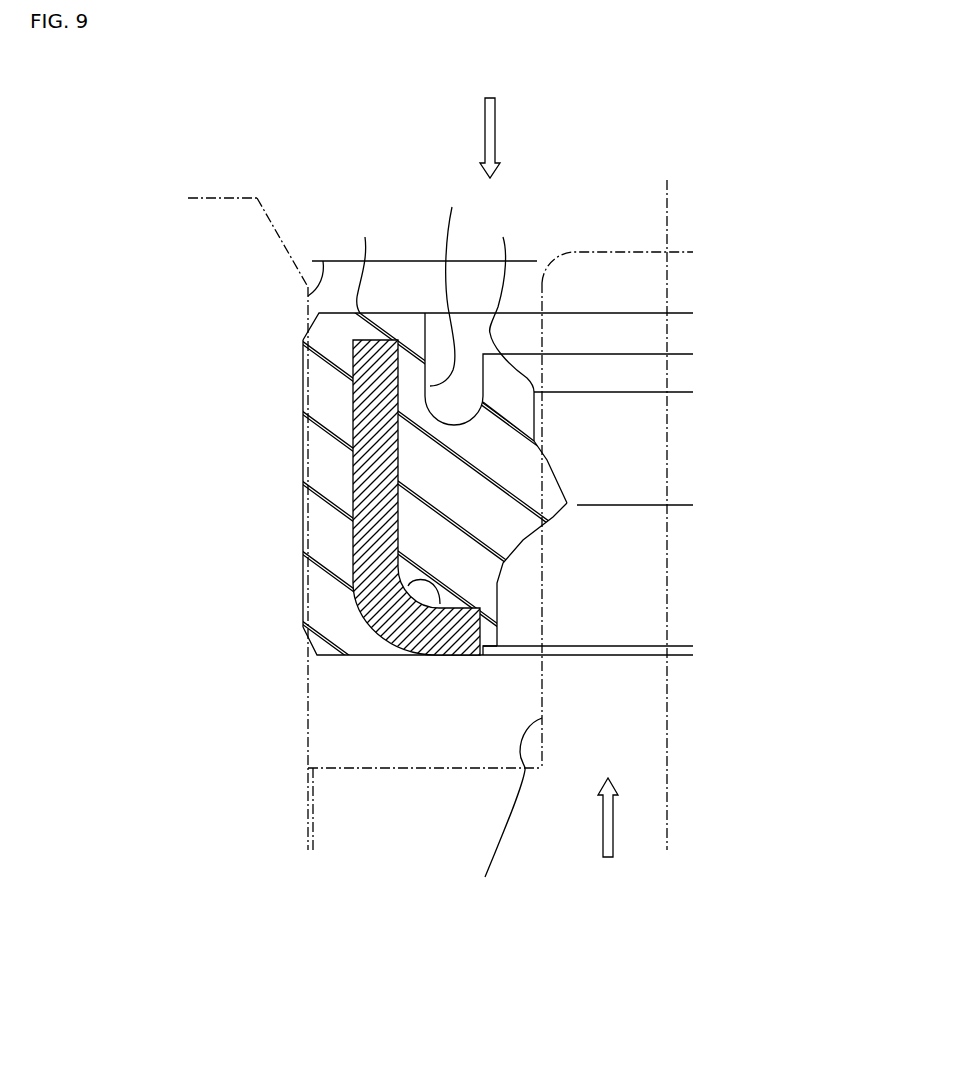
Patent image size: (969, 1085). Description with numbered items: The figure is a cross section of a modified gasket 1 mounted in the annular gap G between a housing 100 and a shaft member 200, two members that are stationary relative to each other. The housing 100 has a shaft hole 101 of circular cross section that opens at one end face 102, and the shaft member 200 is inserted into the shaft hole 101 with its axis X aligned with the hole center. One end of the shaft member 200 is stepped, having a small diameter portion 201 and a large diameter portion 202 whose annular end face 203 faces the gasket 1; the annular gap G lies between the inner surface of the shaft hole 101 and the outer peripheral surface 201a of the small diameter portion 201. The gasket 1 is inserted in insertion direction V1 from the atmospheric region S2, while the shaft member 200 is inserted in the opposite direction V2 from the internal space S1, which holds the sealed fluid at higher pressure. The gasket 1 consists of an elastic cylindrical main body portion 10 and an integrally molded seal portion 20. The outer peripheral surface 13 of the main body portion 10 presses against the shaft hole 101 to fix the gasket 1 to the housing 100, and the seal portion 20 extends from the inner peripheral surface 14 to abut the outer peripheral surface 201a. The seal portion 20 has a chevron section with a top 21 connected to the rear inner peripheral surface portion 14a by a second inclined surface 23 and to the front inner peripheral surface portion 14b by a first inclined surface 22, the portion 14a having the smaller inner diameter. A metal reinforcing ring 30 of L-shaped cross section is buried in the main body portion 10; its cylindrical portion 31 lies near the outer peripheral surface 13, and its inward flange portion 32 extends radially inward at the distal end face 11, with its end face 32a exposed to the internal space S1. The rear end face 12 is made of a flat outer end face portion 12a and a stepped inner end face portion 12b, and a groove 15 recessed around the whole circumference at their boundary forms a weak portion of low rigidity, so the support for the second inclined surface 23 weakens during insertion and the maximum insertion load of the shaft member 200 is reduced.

The gasket 1 is at (430, 140).
The main body portion 10 is at (409, 293).
The rear end face 12 is at (437, 292).
The outer end face portion 12a is at (361, 252).
The inner end face portion 12b is at (509, 292).
The groove 15 is at (447, 288).
The annular gap G is at (426, 260).
The seal portion 20 is at (570, 468).
The distal end face 11 is at (377, 657).
The outer peripheral surface 13 is at (303, 465).
The inner peripheral surface 14 is at (636, 506).
The rear inner peripheral surface portion 14a is at (536, 406).
The front inner peripheral surface portion 14b is at (498, 600).
The top 21 is at (567, 505).
The first inclined surface 22 is at (513, 523).
The second inclined surface 23 is at (545, 463).
The reinforcing ring 30 is at (491, 524).
The cylindrical portion 31 is at (353, 401).
The inward flange portion 32 is at (353, 587).
The end face of inward flange portion 32a is at (463, 658).
The housing 100 is at (197, 185).
The shaft hole 101 is at (323, 261).
The one end face of housing 102 is at (240, 198).
The shaft member 200 is at (636, 246).
The small diameter portion 201 is at (560, 693).
The outer peripheral surface of small diameter portion 201a is at (498, 815).
The large diameter portion 202 is at (327, 833).
The annular end face 203 is at (323, 768).
The internal space S1 is at (404, 735).
The atmospheric region S2 is at (563, 155).
The insertion direction of gasket V1 is at (476, 138).
The insertion direction of shaft member V2 is at (590, 817).
The axis X is at (667, 847).